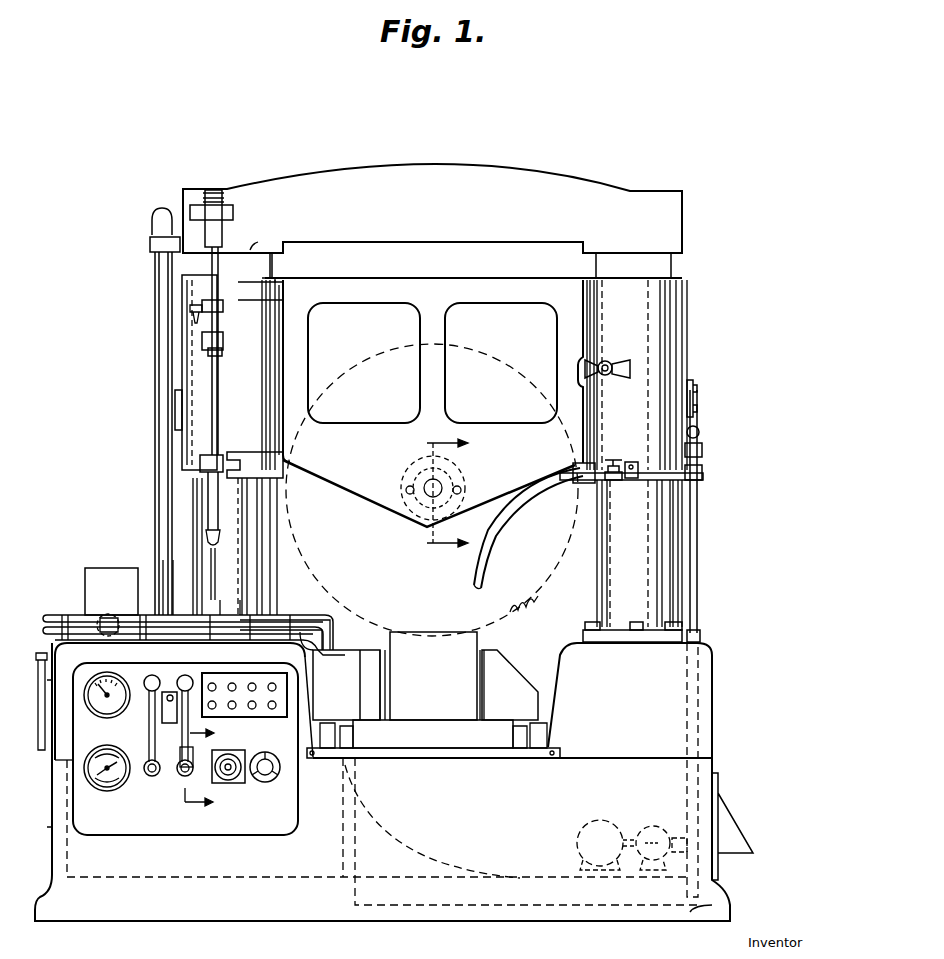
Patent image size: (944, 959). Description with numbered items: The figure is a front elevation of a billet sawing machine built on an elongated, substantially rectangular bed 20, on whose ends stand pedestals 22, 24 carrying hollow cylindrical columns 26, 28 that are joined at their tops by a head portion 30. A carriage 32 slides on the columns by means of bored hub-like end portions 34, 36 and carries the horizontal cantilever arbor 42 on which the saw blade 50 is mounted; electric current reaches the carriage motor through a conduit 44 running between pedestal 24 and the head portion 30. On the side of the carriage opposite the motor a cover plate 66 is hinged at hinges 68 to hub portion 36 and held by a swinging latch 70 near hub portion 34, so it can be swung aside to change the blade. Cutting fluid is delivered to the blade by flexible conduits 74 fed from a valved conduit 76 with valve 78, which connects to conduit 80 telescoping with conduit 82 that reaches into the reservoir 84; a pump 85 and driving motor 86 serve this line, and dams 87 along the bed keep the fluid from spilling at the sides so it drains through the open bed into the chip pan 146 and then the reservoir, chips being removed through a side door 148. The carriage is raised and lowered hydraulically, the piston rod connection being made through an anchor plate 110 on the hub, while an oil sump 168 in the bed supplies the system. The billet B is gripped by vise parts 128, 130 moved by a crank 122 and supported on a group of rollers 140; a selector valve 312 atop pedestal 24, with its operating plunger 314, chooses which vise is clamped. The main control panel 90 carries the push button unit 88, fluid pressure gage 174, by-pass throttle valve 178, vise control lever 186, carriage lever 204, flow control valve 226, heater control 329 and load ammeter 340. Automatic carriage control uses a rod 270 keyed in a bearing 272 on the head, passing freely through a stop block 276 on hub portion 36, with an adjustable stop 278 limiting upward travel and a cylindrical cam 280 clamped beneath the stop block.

The bed 20 is at (677, 807).
The pedestal 22 is at (658, 712).
The pedestal 24 is at (68, 655).
The column 26 is at (650, 587).
The column 28 is at (240, 533).
The head portion 30 is at (543, 183).
The carriage 32 is at (688, 338).
The hub-like end portion 34 is at (667, 384).
The hub-like end portion 36 is at (198, 403).
The shaft or arbor 42 is at (442, 486).
The conduit 44 is at (162, 458).
The saw blade 50 is at (320, 584).
The cover plate 66 is at (360, 482).
The hinges 68 is at (263, 281).
The swinging latch 70 is at (610, 360).
The flexible conduits 74 is at (510, 522).
The conduit 76 is at (653, 482).
The valve 78 is at (612, 460).
The conduit 80 is at (696, 512).
The conduit 82 is at (687, 733).
The reservoir 84 is at (715, 905).
The pump 85 is at (654, 828).
The driving motor 86 is at (594, 825).
The dams 87 is at (515, 758).
The push button unit 88 is at (300, 753).
The main control panel 90 is at (280, 825).
The anchor plate 110 is at (696, 405).
The crank 122 is at (38, 652).
The vise part 128 is at (507, 678).
The vise part 130 is at (368, 682).
The group of rollers 140 is at (474, 736).
The chip pan 146 is at (510, 878).
The side door 148 is at (730, 823).
The oil sump 168 is at (305, 878).
The fluid pressure gage 174 is at (108, 782).
The by-pass throttle valve 178 is at (268, 782).
The vise control lever 186 is at (148, 673).
The lever 204 is at (193, 673).
The flow control valve 226 is at (240, 783).
The rod 270 is at (215, 373).
The bearing 272 is at (226, 236).
The stop block 276 is at (220, 356).
The stop 278 is at (221, 348).
The cylindrical cam 280 is at (214, 518).
The selector valve 312 is at (127, 590).
The operating plunger 314 is at (108, 618).
The thermostat and start-stop control 329 is at (167, 713).
The load ammeter 340 is at (123, 655).
The billet B is at (417, 712).